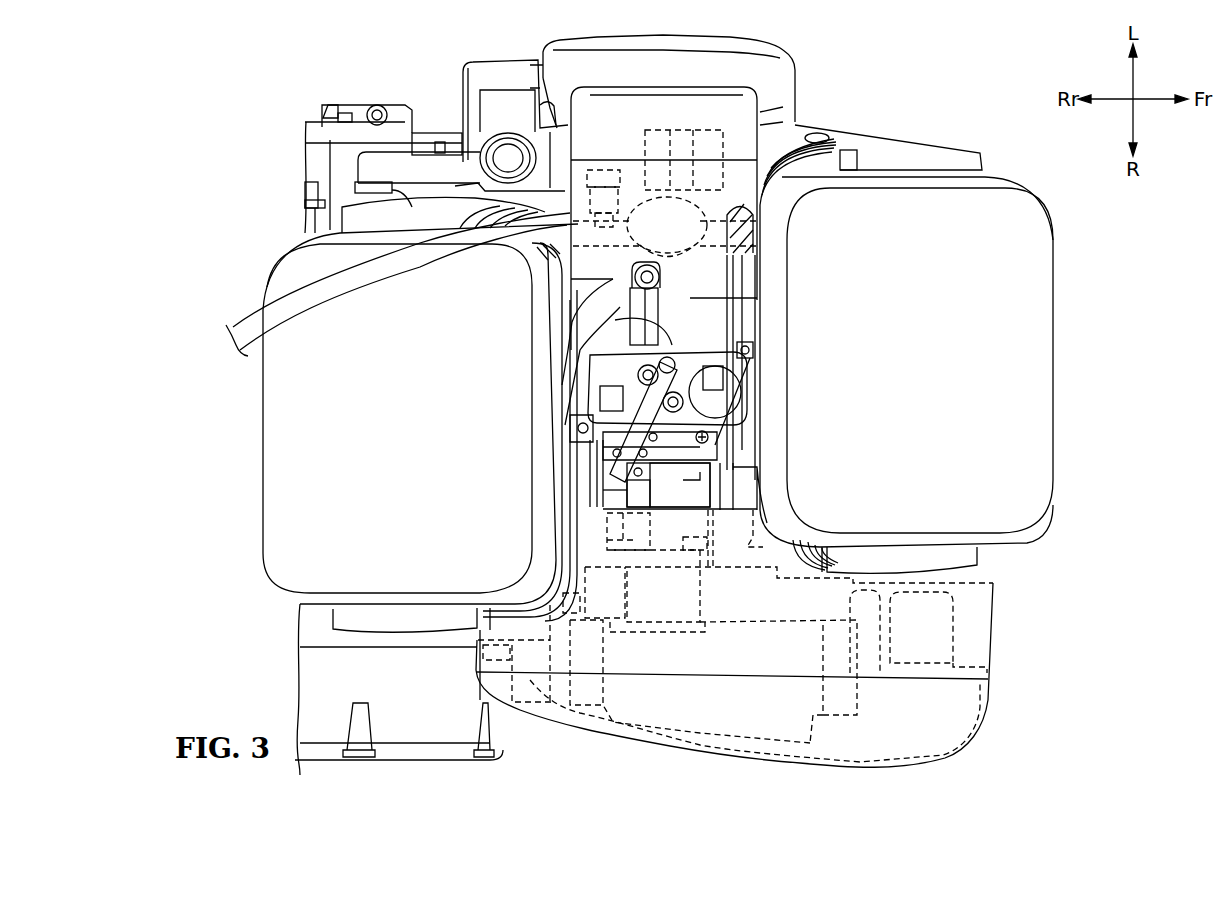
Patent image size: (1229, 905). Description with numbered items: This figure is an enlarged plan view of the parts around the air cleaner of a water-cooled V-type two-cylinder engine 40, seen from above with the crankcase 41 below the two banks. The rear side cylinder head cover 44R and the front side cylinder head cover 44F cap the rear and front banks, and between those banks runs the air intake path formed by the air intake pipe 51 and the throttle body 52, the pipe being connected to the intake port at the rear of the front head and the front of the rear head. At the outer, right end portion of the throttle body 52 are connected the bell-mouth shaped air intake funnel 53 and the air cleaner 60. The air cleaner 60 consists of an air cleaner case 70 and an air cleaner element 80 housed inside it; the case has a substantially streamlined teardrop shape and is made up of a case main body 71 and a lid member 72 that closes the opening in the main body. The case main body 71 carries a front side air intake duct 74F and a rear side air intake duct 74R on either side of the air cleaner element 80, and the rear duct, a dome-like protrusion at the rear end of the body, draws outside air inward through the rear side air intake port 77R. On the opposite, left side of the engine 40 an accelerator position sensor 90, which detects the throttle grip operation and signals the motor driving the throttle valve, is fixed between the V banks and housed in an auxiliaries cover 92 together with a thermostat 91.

The engine 40 is at (880, 134).
The crankcase 41 is at (510, 200).
The rear side cylinder head cover 44R is at (283, 421).
The front side cylinder head cover 44F is at (1030, 380).
The air intake pipe 51 is at (703, 403).
The throttle body 52 is at (650, 493).
The air intake funnel 53 is at (657, 603).
The air cleaner 60 is at (1000, 610).
The air cleaner case 70 is at (963, 748).
The case main body 71 is at (970, 637).
The lid member 72 is at (867, 725).
The front side air intake duct 74F is at (918, 630).
The rear side air intake duct 74R is at (570, 705).
The rear side air intake port 77R is at (525, 703).
The air cleaner element 80 is at (837, 716).
The accelerator position sensor 90 is at (680, 137).
The thermostat 91 is at (597, 263).
The auxiliaries cover 92 is at (638, 110).